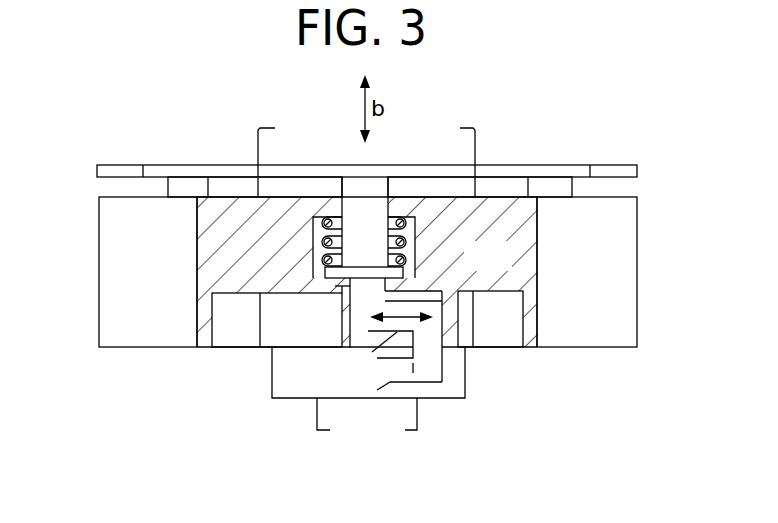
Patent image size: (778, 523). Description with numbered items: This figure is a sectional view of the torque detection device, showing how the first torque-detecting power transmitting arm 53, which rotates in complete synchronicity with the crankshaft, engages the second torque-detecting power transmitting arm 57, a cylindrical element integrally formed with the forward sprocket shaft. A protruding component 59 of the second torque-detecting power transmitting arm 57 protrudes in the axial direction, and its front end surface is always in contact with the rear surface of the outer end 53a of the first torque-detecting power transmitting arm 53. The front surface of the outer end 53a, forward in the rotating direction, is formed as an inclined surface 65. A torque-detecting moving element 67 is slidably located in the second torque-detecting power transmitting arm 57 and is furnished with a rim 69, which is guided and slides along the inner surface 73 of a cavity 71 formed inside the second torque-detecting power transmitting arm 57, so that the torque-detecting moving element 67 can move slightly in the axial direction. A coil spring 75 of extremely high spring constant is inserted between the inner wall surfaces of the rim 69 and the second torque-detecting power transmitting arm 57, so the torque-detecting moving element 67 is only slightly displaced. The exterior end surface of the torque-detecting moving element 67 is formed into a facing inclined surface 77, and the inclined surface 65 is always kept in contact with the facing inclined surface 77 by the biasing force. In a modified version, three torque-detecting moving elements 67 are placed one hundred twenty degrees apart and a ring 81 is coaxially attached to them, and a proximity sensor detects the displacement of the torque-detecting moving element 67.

The first torque-detecting power transmitting arm 53 is at (430, 366).
The outer end 53a is at (367, 272).
The second torque-detecting power transmitting arm 57 is at (128, 260).
The protruding component 59 is at (452, 322).
The inclined surface 65 is at (357, 312).
The torque-detecting moving element 67 is at (357, 188).
The rim 69 is at (322, 274).
The cavity 71 is at (414, 230).
The inner surface 73 is at (313, 230).
The coil spring 75 is at (403, 215).
The facing inclined surface 77 is at (405, 321).
The ring 81 is at (170, 165).